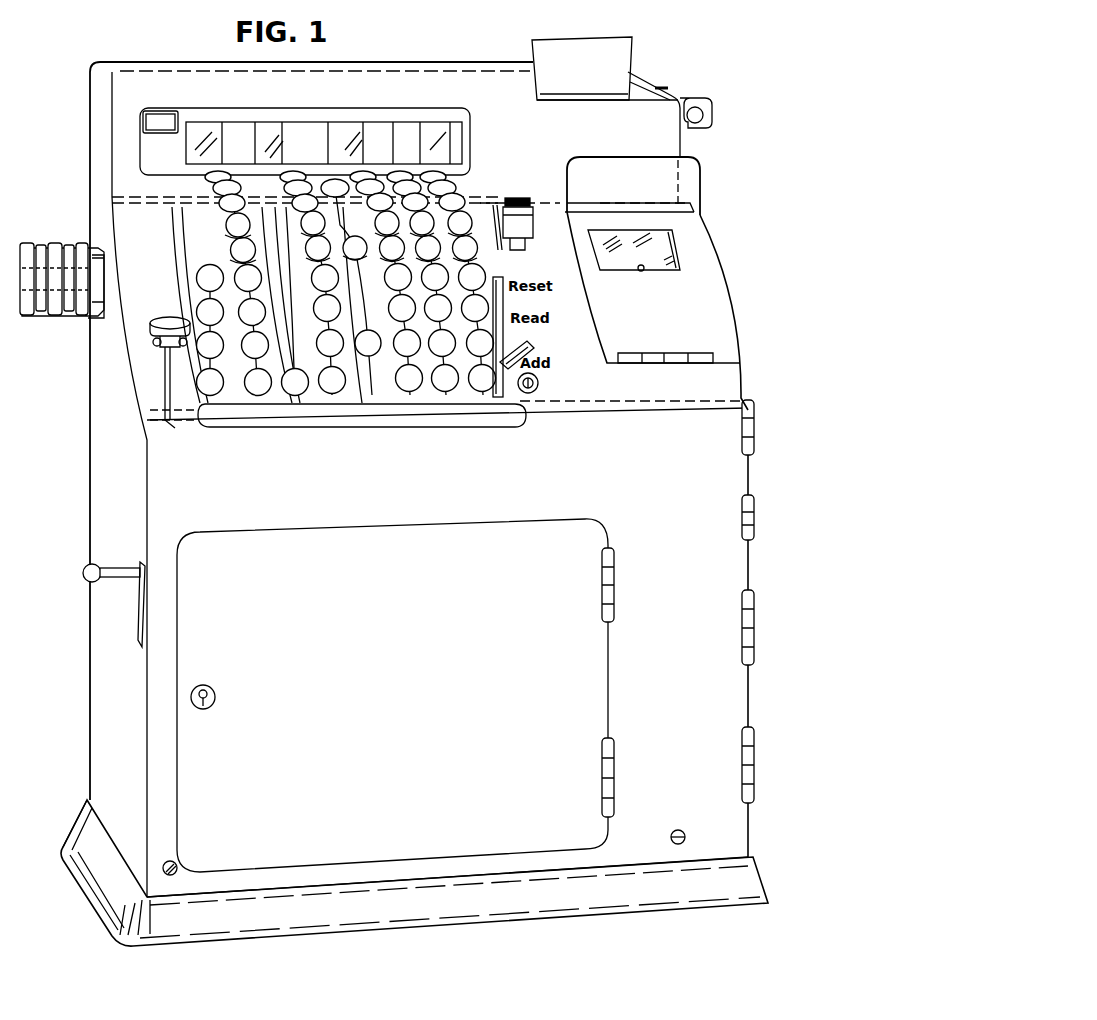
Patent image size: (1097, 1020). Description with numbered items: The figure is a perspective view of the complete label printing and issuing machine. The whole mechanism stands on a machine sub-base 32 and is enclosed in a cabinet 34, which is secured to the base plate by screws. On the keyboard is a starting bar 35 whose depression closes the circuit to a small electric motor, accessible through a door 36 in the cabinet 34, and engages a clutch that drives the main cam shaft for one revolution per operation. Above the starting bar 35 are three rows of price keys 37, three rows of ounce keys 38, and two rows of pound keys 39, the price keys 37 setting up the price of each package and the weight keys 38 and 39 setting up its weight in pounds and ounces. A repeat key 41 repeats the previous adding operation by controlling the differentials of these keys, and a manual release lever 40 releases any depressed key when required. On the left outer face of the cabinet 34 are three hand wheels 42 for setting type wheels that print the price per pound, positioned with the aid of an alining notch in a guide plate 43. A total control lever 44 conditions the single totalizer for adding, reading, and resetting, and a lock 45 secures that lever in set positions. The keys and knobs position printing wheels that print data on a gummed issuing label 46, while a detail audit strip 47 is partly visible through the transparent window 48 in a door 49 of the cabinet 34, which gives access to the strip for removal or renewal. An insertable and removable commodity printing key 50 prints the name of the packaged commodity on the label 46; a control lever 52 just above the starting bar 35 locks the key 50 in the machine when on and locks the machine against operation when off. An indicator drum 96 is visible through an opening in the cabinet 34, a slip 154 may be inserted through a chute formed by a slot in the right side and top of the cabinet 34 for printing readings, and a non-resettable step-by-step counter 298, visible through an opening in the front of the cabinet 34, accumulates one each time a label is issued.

The machine sub-base 32 is at (244, 935).
The cabinet 34 is at (92, 400).
The starting bar 35 is at (524, 244).
The door 36 is at (316, 532).
The price keys 37 is at (413, 391).
The ounce keys 38 is at (300, 391).
The pound keys 39 is at (222, 391).
The manual release lever 40 is at (112, 570).
The repeat key 41 is at (170, 322).
The hand wheels 42 is at (57, 242).
The guide plate 43 is at (96, 256).
The total control lever 44 is at (527, 343).
The lock 45 is at (540, 383).
The issuing label 46 is at (598, 40).
The detail audit strip 47 is at (674, 267).
The window 48 is at (641, 271).
The door 49 is at (738, 316).
The commodity printing keys 50 is at (692, 100).
The control lever 52 is at (506, 200).
The indicator drum 96 is at (440, 135).
The slip 154 is at (697, 186).
The step-by-step counter 298 is at (158, 113).